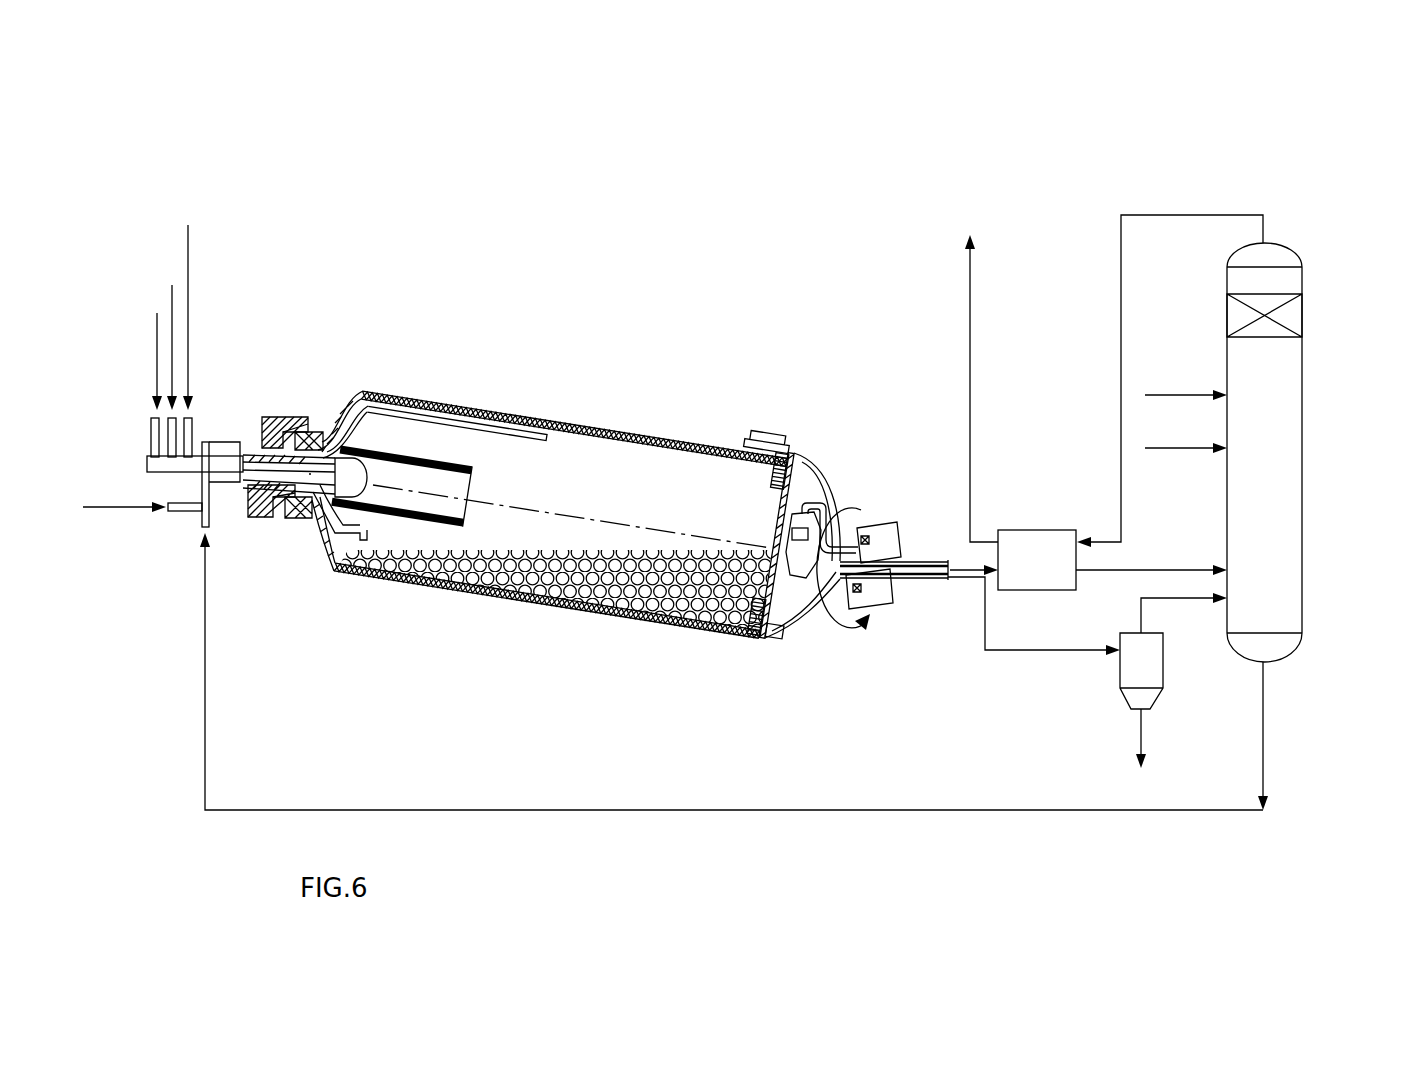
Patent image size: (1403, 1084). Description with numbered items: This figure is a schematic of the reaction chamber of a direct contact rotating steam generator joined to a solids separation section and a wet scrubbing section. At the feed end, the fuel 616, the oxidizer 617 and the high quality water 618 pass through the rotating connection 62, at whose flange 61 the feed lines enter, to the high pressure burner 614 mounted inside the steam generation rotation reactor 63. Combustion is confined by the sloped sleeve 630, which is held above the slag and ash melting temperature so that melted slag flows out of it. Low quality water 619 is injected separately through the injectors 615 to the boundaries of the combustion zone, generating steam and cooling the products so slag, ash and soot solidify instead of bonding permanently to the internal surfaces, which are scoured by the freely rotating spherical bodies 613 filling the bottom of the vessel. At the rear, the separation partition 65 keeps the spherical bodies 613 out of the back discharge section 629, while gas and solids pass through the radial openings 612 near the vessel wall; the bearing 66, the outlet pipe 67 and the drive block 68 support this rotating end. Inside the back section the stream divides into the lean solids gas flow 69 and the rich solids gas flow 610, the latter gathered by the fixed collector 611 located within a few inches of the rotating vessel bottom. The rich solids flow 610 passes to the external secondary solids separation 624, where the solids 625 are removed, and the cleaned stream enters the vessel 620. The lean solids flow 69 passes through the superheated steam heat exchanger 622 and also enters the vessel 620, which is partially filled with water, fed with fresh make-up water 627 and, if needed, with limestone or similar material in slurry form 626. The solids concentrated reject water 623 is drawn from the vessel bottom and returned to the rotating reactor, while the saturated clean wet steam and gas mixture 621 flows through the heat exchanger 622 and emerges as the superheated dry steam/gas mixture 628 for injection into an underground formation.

The feed flange 61 is at (215, 462).
The rotating connection 62 is at (271, 440).
The steam generation rotation reactor 63 is at (565, 465).
The separation partition 65 is at (770, 470).
The bearing 66 is at (764, 470).
The discharge pipe 67 is at (809, 520).
The drive bearing block 68 is at (881, 527).
The lean solids gas flow 69 is at (920, 562).
The rich solids gas flow 610 is at (910, 577).
The collector 611 is at (785, 583).
The radial openings 612 is at (752, 633).
The spherical bodies 613 is at (465, 590).
The high pressure burner 614 is at (351, 488).
The injectors 615 is at (363, 403).
The fuel 616 is at (142, 372).
The oxidizer 617 is at (160, 346).
The high quality water 618 is at (177, 314).
The low quality water 619 is at (87, 508).
The vessel 620 is at (1290, 355).
The saturated clean wet steam and gas mixture 621 is at (1217, 215).
The superheated steam heat exchanger 622 is at (1017, 535).
The solids concentrated reject water 623 is at (1263, 725).
The external secondary solids separation 624 is at (1132, 673).
The solids 625 is at (1175, 738).
The slurry injection 626 is at (1186, 433).
The fresh make-up water 627 is at (1186, 380).
The superheated dry steam/gas mixture 628 is at (970, 353).
The back discharge section 629 is at (787, 638).
The sloped sleeve 630 is at (395, 478).